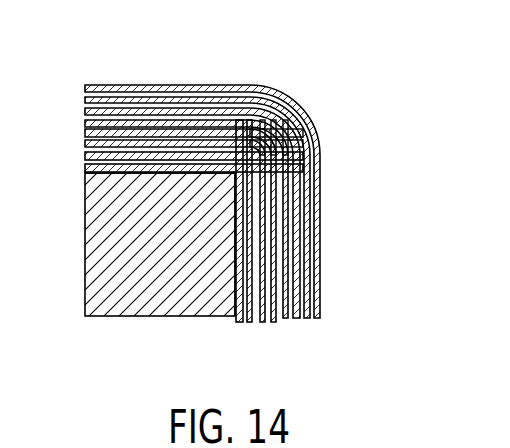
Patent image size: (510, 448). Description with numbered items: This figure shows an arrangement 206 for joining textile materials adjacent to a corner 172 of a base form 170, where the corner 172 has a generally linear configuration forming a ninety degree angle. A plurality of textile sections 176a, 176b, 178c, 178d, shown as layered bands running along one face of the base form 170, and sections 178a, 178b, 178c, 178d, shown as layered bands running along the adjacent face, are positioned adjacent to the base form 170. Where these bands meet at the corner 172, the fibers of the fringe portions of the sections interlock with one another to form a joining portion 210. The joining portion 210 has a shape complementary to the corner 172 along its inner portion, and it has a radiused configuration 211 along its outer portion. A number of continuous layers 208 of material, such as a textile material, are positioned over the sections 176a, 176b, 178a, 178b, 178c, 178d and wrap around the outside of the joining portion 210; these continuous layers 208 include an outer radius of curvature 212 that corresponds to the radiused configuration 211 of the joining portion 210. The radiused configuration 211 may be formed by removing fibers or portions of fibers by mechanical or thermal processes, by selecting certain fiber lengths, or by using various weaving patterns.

The arrangement 206 is at (264, 66).
The continuous layers 208 is at (323, 321).
The joining portion 210 is at (270, 150).
The radiused configuration 211 is at (292, 140).
The outer radius of curvature 212 is at (277, 110).
The base form 170 is at (95, 291).
The corner 172 is at (230, 181).
The section 176a is at (85, 173).
The section 176b is at (85, 163).
The section 178a is at (238, 321).
The section 178b is at (250, 321).
The section 178c is at (85, 148).
The section 178d is at (85, 133).